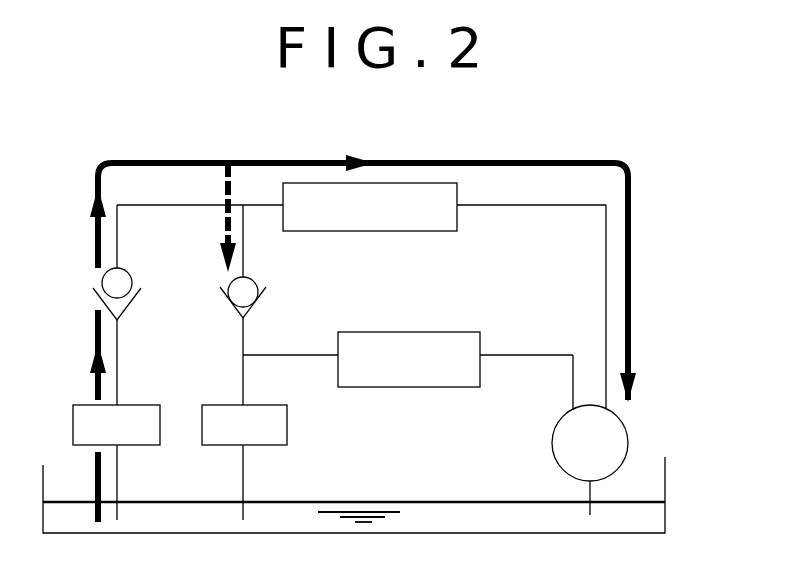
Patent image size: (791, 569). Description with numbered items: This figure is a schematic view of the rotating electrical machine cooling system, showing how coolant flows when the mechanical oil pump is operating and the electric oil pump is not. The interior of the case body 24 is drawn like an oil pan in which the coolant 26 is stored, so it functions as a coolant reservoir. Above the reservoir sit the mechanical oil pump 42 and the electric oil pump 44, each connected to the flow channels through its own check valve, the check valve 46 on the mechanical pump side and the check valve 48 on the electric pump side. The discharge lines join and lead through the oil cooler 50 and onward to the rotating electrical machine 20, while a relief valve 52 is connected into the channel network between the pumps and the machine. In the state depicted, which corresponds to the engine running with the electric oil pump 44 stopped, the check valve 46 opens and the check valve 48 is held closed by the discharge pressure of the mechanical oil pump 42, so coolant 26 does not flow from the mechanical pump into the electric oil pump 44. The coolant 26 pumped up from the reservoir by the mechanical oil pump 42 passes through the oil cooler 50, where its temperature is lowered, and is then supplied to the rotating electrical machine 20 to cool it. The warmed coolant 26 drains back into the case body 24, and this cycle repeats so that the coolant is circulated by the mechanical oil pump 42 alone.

The rotating electrical machine 20 is at (553, 437).
The case body 24 is at (665, 485).
The coolant 26 is at (453, 515).
The mechanical oil pump 42 is at (145, 445).
The electric oil pump 44 is at (270, 445).
The check valve 46 is at (134, 308).
The check valve 48 is at (261, 305).
The oil cooler 50 is at (368, 231).
The relief valve 52 is at (408, 387).